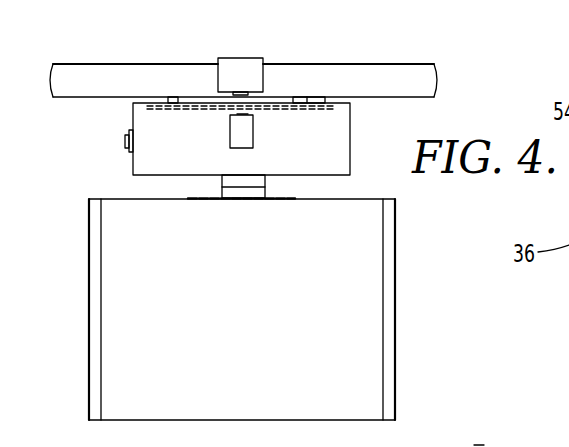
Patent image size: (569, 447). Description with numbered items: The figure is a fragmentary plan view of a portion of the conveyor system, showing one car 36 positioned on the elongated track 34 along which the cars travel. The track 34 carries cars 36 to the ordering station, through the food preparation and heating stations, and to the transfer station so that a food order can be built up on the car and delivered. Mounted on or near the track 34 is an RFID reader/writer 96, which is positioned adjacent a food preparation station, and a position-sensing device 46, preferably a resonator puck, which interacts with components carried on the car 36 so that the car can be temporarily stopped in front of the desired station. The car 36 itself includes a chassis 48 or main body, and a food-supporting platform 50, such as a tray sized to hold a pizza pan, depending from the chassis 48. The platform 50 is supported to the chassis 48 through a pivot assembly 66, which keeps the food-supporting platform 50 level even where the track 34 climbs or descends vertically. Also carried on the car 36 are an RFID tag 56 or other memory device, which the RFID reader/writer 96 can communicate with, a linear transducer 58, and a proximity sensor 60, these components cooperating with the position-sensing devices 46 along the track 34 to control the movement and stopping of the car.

The track 34 is at (443, 67).
The RFID reader/writer 96 is at (233, 66).
The position-sensing device 46 is at (318, 100).
The car 36 is at (357, 133).
The proximity sensor 60 is at (126, 140).
The linear transducer 58 is at (198, 107).
The RFID tag 56 is at (250, 139).
The chassis 48 is at (158, 172).
The pivot assembly 66 is at (243, 188).
The food-supporting platform 50 is at (370, 332).